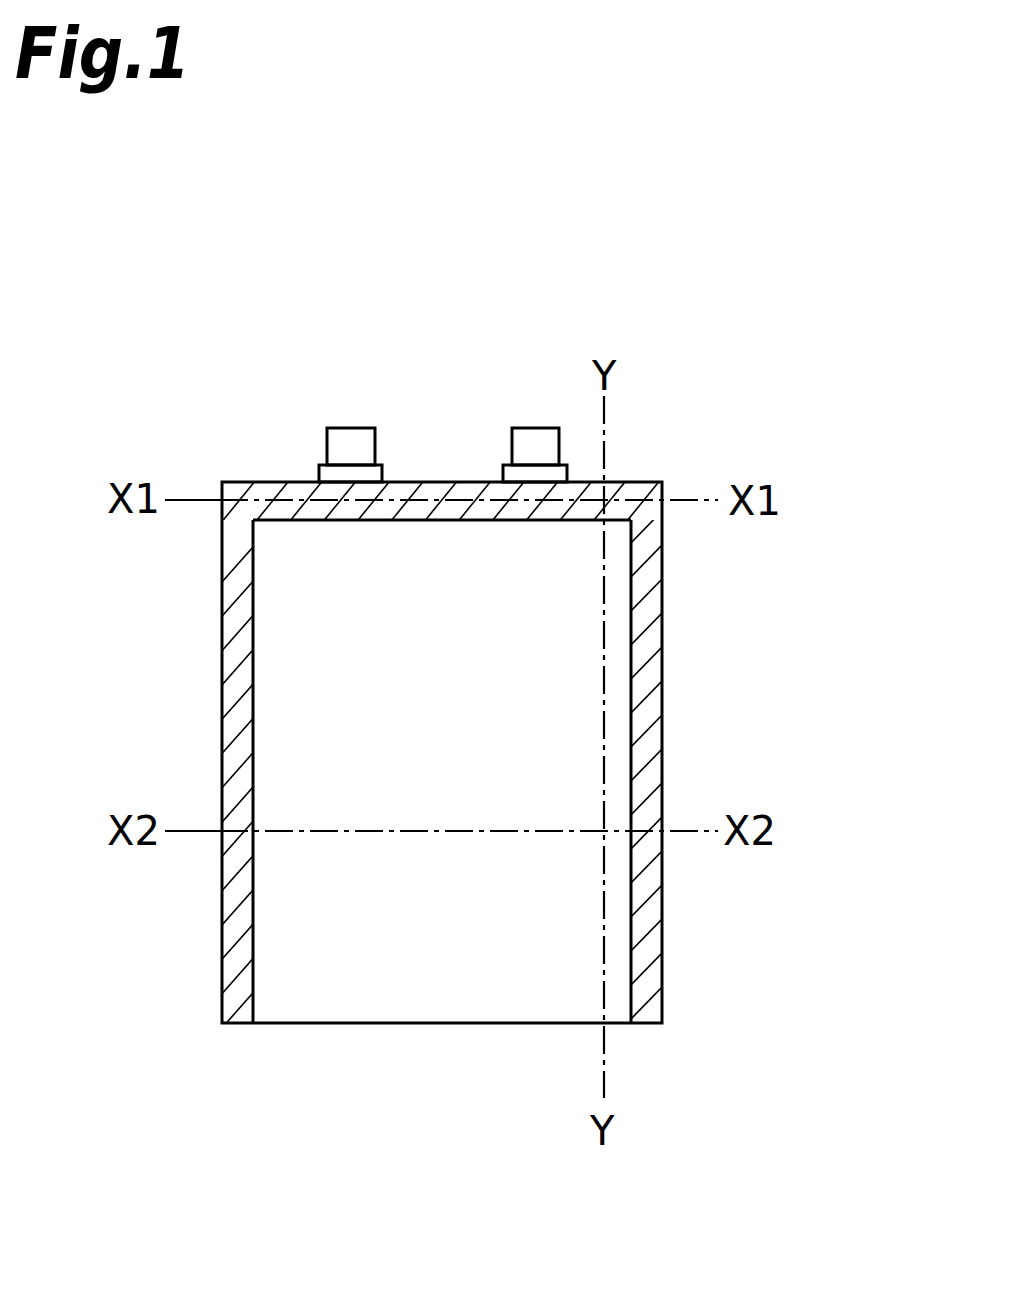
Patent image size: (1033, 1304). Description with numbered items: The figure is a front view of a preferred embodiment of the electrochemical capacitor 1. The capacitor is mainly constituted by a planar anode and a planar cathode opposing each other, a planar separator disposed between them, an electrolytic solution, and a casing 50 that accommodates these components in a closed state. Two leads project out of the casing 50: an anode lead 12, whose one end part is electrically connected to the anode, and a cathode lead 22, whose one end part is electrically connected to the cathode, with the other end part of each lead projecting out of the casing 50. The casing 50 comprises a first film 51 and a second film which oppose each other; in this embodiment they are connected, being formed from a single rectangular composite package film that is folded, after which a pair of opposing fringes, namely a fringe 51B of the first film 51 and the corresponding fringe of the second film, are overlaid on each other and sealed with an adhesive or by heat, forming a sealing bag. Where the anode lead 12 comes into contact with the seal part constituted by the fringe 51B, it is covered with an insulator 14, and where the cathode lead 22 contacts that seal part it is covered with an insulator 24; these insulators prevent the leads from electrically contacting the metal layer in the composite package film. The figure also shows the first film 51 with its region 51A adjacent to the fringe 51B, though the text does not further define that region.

The electrochemical capacitor 1 is at (658, 317).
The anode lead 12 is at (350, 427).
The insulator 14 is at (317, 475).
The cathode lead 22 is at (537, 427).
The insulator 24 is at (503, 475).
The casing 50 is at (663, 745).
The first film 51 is at (818, 601).
The inner layer of side wall 51A is at (578, 620).
The fringe of the first film 51B is at (642, 685).